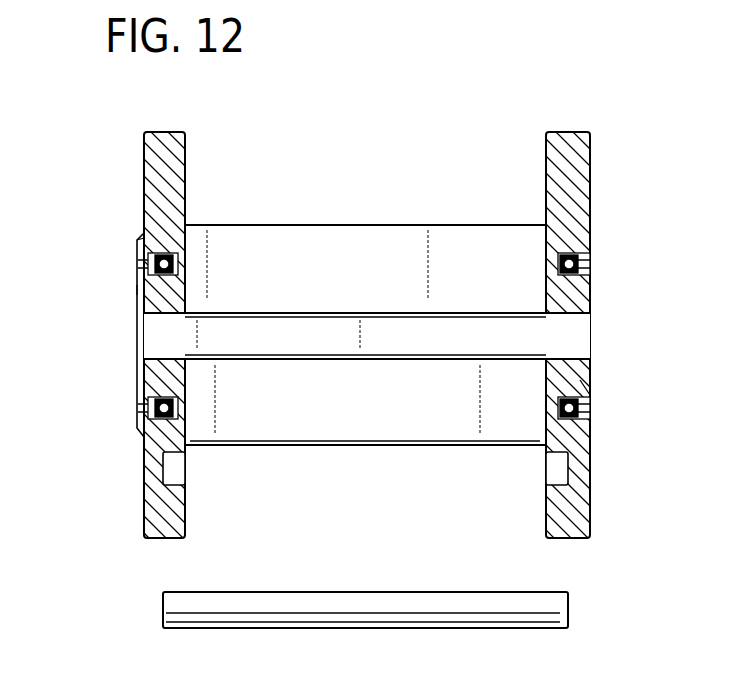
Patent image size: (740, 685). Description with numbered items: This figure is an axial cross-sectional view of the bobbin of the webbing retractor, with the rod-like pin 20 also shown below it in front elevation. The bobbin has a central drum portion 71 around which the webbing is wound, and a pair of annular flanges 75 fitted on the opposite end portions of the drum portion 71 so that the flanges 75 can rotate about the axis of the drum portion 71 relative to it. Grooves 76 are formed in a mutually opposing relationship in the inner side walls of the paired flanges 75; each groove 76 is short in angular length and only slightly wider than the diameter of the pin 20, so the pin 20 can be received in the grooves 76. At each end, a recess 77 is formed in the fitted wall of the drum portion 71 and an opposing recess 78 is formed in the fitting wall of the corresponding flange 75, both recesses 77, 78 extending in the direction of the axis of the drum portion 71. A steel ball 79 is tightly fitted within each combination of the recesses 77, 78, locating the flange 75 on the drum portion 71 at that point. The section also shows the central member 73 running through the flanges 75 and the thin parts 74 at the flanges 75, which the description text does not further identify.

The pin 20 is at (387, 592).
The drum portion 71 is at (350, 225).
The shaft 73 is at (573, 333).
The retaining ring 74 is at (157, 383).
The annular flanges 75 is at (152, 162).
The grooves 76 is at (175, 470).
The recess 77 is at (140, 290).
The recess 78 is at (143, 240).
The steel ball 79 is at (172, 260).